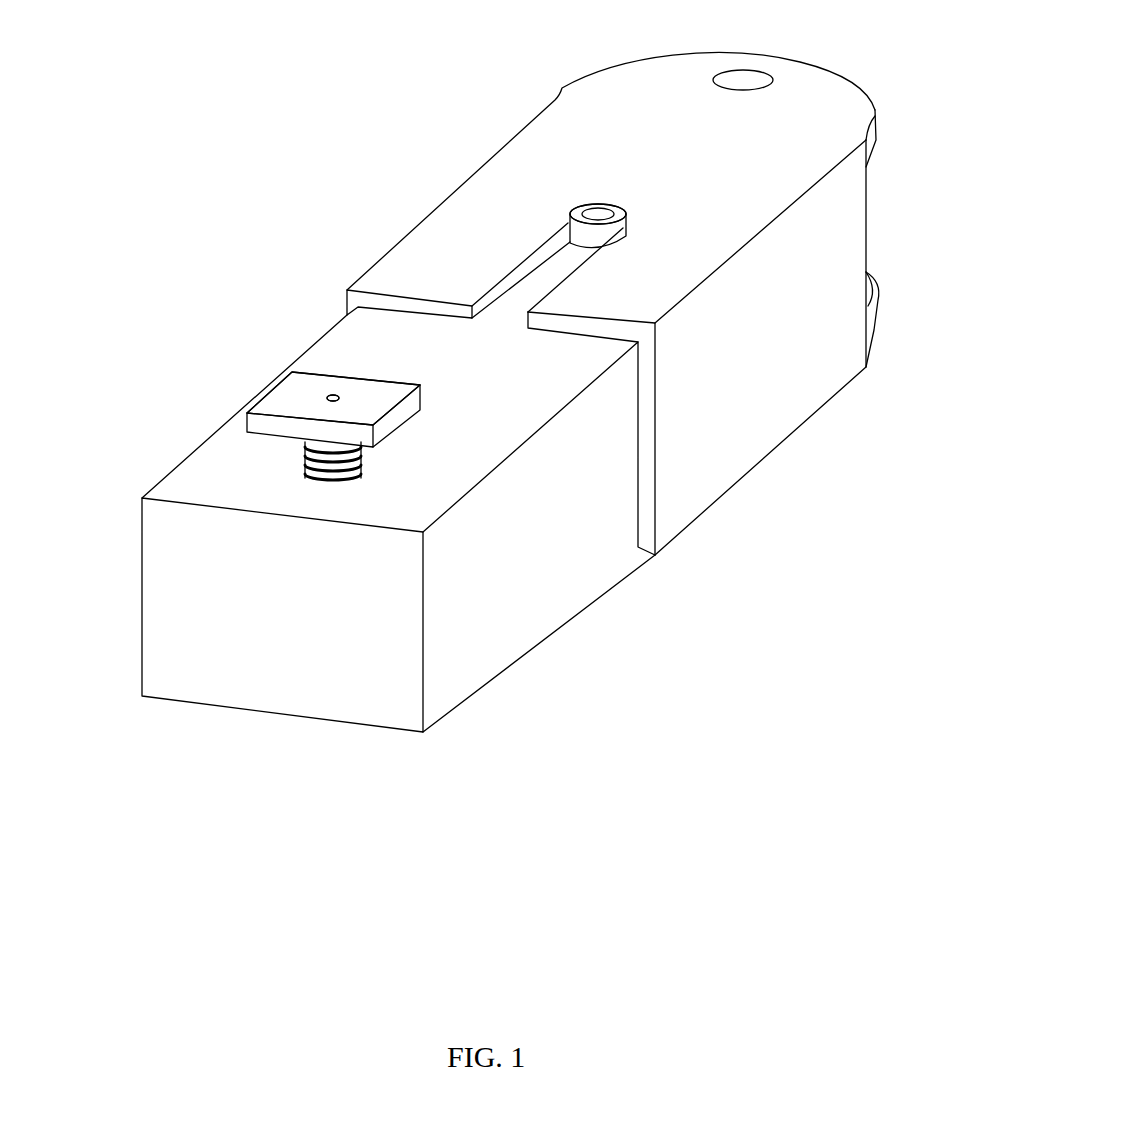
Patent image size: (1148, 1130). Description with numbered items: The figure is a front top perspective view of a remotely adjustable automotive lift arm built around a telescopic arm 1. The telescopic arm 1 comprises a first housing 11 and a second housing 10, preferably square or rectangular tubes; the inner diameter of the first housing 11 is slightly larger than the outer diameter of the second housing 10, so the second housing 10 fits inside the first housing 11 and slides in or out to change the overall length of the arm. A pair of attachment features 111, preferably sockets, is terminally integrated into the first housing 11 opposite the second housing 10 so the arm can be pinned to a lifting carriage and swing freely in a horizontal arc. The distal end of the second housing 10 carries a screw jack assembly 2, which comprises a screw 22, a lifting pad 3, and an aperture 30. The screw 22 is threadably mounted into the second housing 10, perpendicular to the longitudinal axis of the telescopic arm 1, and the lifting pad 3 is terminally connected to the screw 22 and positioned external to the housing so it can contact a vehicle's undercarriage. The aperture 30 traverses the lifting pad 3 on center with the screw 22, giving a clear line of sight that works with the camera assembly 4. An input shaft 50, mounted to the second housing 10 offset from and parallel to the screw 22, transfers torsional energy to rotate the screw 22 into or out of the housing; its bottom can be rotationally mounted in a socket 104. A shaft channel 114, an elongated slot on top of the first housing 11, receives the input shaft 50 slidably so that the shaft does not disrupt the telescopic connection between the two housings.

The telescopic arm 1 is at (246, 213).
The second housing 10 is at (152, 660).
The first housing 11 is at (510, 168).
The pair of attachment features 111 is at (891, 120).
The shaft channel 114 is at (512, 306).
The input shaft 50 is at (626, 215).
The socket 104 is at (598, 214).
The screw jack assembly 2 is at (333, 398).
The lifting pad 3 is at (250, 420).
The camera assembly 4 is at (333, 398).
The aperture 30 is at (333, 398).
The screw 22 is at (303, 447).